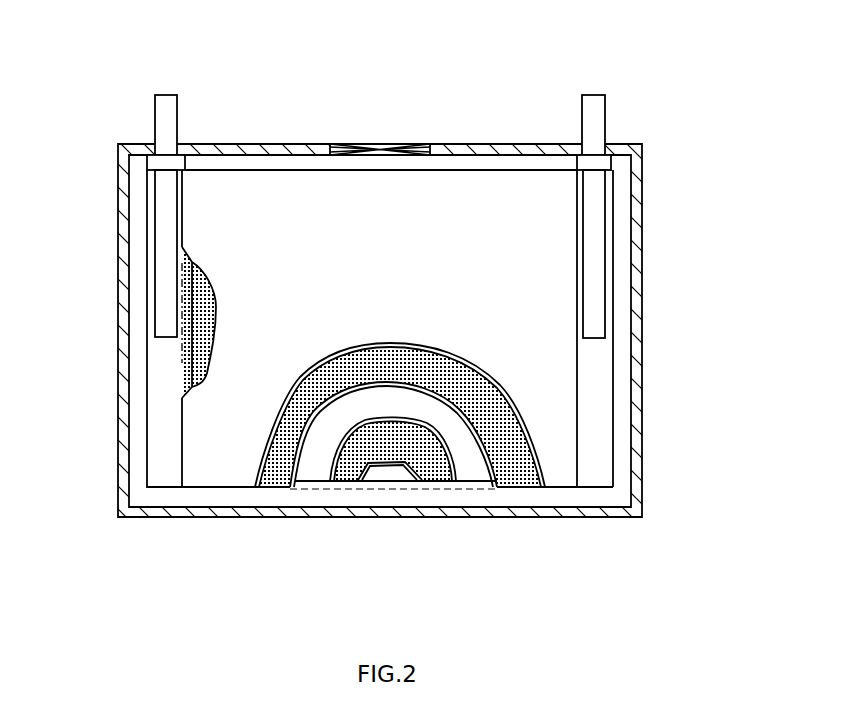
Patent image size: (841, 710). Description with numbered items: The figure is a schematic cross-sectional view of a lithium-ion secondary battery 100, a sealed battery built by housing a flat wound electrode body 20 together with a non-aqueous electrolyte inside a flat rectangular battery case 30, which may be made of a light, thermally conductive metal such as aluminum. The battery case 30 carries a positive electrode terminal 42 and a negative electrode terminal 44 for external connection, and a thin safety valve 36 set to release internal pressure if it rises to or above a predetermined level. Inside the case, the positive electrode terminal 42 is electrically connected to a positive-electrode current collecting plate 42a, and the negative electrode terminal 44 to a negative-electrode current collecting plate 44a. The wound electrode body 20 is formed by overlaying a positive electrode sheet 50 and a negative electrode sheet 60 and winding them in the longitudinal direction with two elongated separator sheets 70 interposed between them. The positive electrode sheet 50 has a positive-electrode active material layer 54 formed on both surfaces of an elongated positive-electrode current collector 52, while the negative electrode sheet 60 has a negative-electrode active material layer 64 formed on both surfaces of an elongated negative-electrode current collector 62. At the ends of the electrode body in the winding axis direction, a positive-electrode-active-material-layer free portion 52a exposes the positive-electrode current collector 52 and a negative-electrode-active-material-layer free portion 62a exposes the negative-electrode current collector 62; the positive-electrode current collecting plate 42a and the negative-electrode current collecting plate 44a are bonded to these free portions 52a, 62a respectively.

The lithium-ion secondary battery 100 is at (642, 112).
The wound electrode body 20 is at (273, 198).
The battery case 30 is at (423, 284).
The safety valve 36 is at (380, 143).
The positive electrode terminal 42 is at (167, 100).
The positive-electrode current collecting plate 42a is at (167, 233).
The negative electrode terminal 44 is at (593, 100).
The negative-electrode current collecting plate 44a is at (593, 202).
The positive electrode sheet 50 is at (273, 473).
The positive-electrode current collector 52 is at (145, 393).
The positive-electrode-active-material-layer free portion 52a is at (162, 465).
The positive-electrode active material layer 54 is at (202, 295).
The negative electrode sheet 60 is at (347, 470).
The negative-electrode current collector 62 is at (613, 350).
The negative-electrode-active-material-layer free portion 62a is at (600, 395).
The negative-electrode active material layer 64 is at (393, 451).
The separator sheet 70 is at (217, 423).